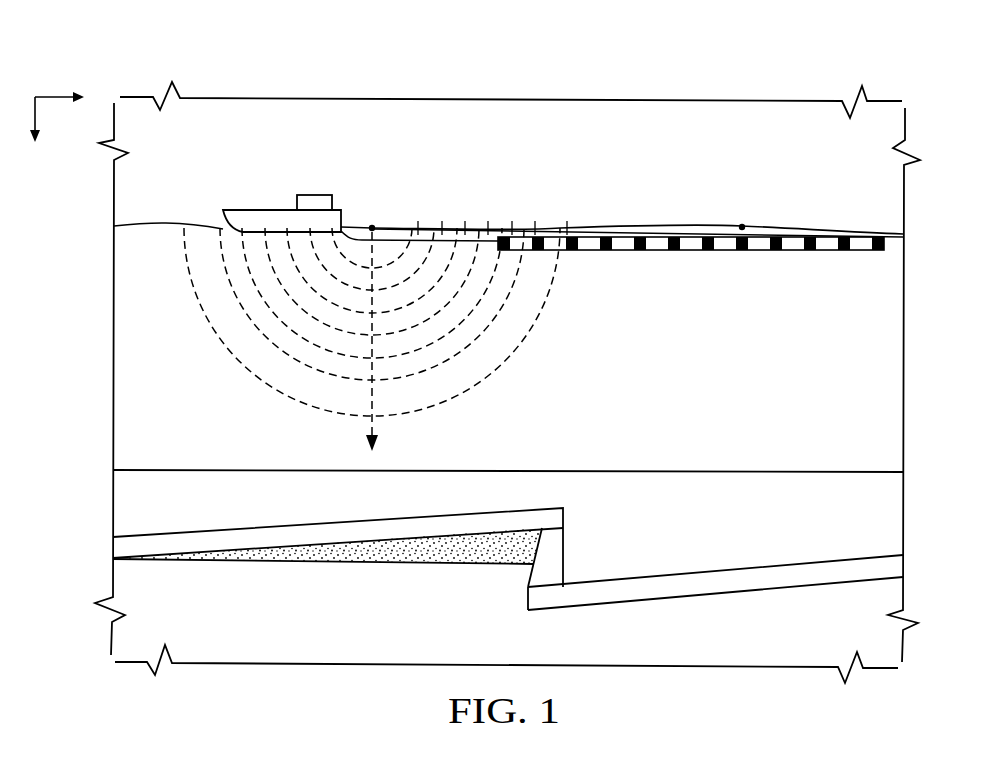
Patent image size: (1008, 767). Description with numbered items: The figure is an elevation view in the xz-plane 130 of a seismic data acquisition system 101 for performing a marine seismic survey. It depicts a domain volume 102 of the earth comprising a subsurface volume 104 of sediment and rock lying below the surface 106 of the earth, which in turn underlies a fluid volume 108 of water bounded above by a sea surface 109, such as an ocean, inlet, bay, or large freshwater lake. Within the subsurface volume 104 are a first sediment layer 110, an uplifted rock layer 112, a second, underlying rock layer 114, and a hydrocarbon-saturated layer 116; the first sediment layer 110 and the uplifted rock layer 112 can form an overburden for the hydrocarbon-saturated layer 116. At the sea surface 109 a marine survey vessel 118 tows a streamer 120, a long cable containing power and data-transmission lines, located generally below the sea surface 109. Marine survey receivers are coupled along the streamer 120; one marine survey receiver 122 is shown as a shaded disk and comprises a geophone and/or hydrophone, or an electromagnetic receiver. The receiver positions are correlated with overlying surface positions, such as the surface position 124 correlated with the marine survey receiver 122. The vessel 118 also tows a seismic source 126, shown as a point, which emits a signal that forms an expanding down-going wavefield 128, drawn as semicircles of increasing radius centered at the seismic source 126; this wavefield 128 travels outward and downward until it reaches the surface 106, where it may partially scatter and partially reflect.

The marine seismic survey system 101 is at (690, 60).
The domain volume 102 is at (91, 289).
The subsurface volume 104 is at (88, 491).
The surface of the earth 106 is at (433, 470).
The fluid volume 108 is at (835, 441).
The sea surface 109 is at (603, 226).
The first sediment layer 110 is at (869, 535).
The uplifted rock layer 112 is at (118, 547).
The second underlying rock layer 114 is at (118, 628).
The hydrocarbon-saturated layer 116 is at (317, 553).
The marine survey vessel 118 is at (314, 194).
The streamer 120 is at (657, 259).
The marine survey receiver 122 is at (743, 252).
The surface position 124 is at (740, 224).
The seismic source 126 is at (375, 225).
The down-going wavefield 128 is at (508, 362).
The xz-plane 130 is at (53, 93).